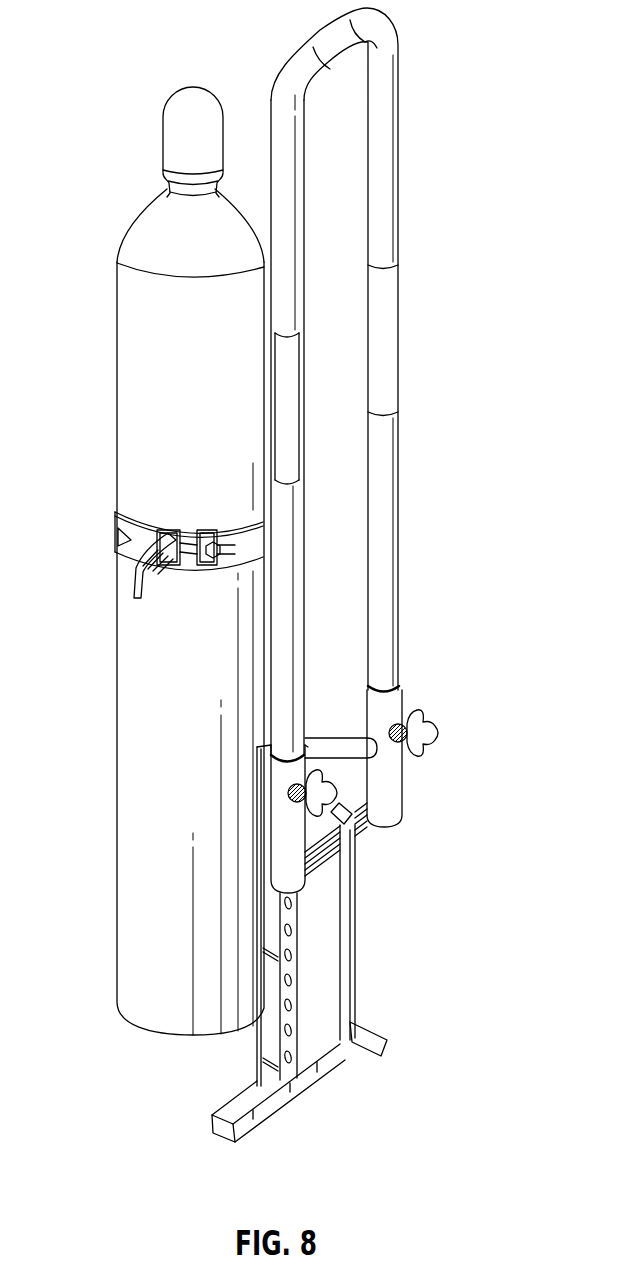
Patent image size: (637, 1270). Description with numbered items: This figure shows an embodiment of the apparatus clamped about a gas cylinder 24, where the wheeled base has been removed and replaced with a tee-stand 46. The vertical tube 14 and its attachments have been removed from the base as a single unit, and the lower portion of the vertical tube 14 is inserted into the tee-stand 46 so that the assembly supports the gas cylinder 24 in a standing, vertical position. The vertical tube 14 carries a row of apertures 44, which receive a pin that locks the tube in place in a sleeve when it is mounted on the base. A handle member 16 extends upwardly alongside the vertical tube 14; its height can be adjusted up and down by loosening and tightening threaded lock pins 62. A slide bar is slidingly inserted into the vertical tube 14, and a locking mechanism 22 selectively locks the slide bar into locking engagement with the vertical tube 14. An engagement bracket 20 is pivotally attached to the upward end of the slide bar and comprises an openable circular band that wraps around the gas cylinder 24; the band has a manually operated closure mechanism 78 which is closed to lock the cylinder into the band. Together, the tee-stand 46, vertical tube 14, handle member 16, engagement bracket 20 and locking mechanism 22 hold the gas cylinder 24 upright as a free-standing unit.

The vertical tube 14 is at (298, 923).
The handle member 16 is at (399, 465).
The engagement bracket 20 is at (305, 576).
The locking mechanism 22 is at (280, 772).
The gas cylinder 24 is at (117, 613).
The apertures 44 is at (298, 980).
The tee-stand 46 is at (310, 1086).
The threaded lock pins 62 is at (317, 797).
The closure mechanism 78 is at (115, 530).